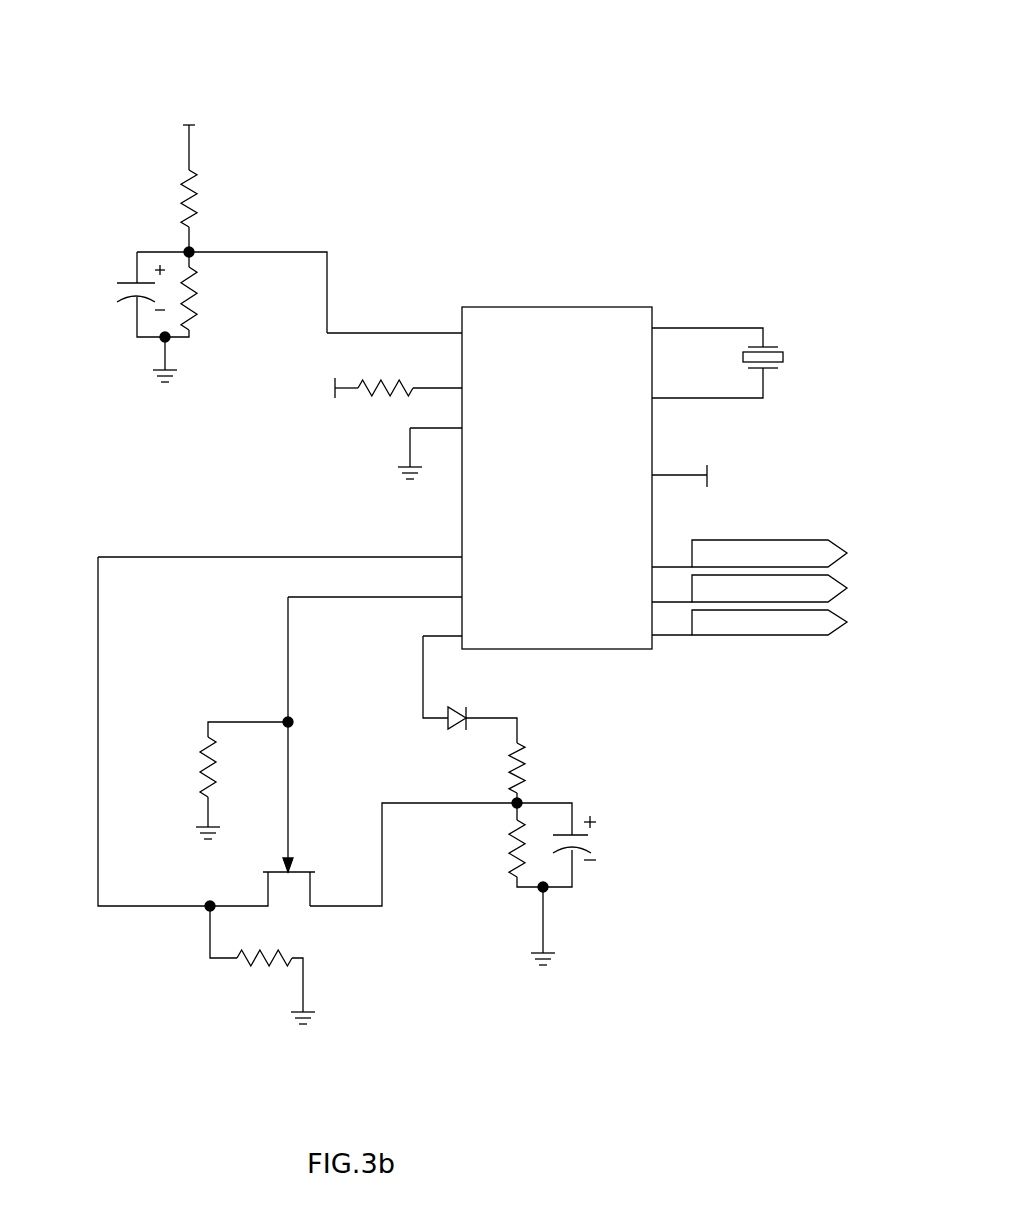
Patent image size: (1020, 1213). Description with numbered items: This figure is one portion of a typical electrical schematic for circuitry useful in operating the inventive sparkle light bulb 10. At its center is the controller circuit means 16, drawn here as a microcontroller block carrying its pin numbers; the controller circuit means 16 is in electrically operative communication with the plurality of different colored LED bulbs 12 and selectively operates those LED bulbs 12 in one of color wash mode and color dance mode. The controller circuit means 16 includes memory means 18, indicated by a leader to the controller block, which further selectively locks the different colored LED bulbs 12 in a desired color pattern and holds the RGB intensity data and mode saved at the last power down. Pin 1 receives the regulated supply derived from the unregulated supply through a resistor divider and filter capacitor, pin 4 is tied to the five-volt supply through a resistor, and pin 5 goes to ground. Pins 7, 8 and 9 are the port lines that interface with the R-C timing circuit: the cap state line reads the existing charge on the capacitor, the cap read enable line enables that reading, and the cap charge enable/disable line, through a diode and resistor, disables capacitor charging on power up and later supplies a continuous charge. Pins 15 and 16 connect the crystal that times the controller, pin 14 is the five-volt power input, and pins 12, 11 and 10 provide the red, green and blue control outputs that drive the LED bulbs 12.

The controller circuit means 16 is at (493, 132).
The memory means 18 is at (500, 307).
The controller pin 1 is at (394, 317).
The controller pin 4 is at (437, 374).
The controller pin 5 is at (436, 414).
The controller pin 7 (Port B1) 7 is at (280, 542).
The controller pin 8 (Port B2) 8 is at (375, 581).
The controller pin 9 (Port B3) 9 is at (442, 624).
The sparkle light bulb 10 is at (749, 623).
The controller pin 11 (Green Control) 11 is at (749, 589).
The different colored LED bulbs 12 is at (749, 554).
The controller pin 14 (+5 VDC) 14 is at (679, 464).
The controller pin 15 is at (707, 384).